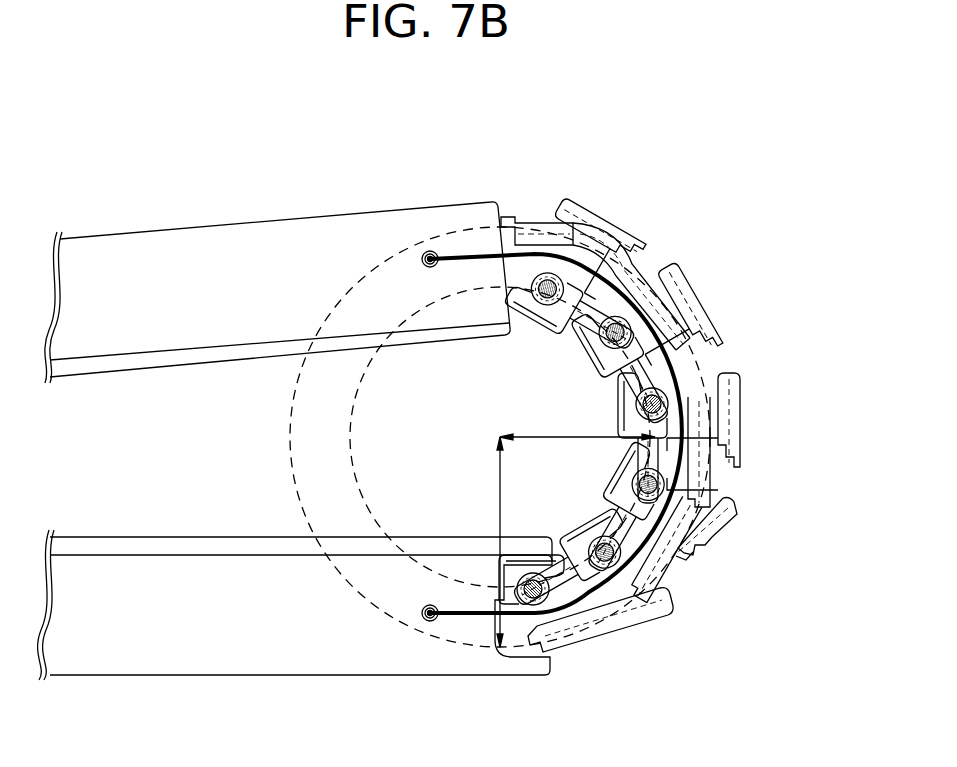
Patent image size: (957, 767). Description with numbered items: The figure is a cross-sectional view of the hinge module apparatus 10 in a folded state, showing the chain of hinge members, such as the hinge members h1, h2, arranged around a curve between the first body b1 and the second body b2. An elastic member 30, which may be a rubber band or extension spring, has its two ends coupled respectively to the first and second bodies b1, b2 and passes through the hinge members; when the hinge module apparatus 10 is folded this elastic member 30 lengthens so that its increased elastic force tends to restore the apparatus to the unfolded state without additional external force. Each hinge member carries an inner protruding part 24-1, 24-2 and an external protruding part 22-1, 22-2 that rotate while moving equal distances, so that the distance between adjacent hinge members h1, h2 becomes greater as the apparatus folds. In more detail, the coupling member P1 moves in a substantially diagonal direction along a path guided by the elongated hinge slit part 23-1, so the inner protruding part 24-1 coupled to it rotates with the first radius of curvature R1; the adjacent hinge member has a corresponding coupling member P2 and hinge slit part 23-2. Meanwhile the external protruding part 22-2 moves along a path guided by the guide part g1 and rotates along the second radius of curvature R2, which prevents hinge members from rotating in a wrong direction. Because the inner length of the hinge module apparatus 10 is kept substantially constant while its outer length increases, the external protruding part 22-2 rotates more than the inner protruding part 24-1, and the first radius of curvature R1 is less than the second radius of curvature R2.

The hinge module apparatus 10 is at (713, 158).
The elastic member 30 is at (528, 252).
The first body b1 is at (305, 228).
The second body b2 is at (320, 662).
The external protruding part 22-1 is at (673, 617).
The hinge slit part 23-1 is at (580, 600).
The inner protruding part 24-1 is at (620, 615).
The coupling member P1 is at (645, 570).
The external protruding part 22-2 is at (700, 477).
The hinge slit part 23-2 is at (700, 537).
The inner protruding part 24-2 is at (720, 503).
The coupling member P2 is at (710, 497).
The guide part g1 is at (693, 552).
The hinge member h1 is at (612, 476).
The hinge member h2 is at (622, 406).
The first radius of curvature R1 is at (577, 424).
The second radius of curvature R2 is at (488, 542).